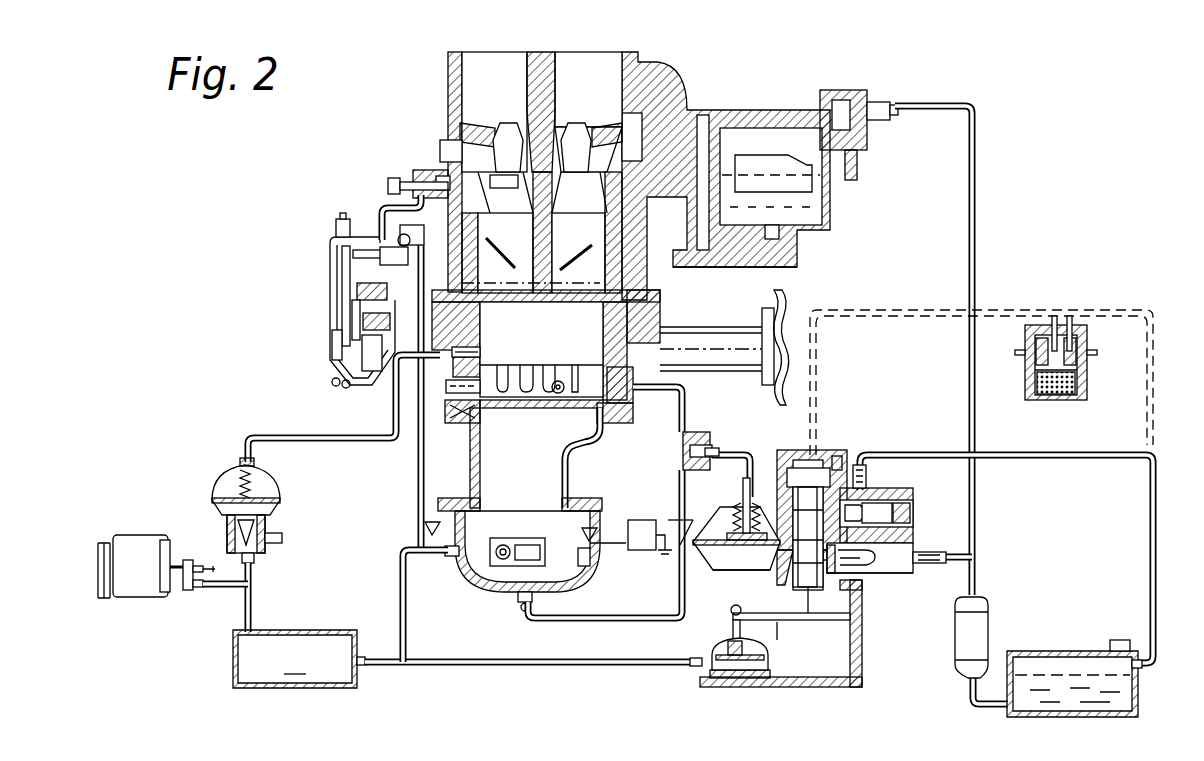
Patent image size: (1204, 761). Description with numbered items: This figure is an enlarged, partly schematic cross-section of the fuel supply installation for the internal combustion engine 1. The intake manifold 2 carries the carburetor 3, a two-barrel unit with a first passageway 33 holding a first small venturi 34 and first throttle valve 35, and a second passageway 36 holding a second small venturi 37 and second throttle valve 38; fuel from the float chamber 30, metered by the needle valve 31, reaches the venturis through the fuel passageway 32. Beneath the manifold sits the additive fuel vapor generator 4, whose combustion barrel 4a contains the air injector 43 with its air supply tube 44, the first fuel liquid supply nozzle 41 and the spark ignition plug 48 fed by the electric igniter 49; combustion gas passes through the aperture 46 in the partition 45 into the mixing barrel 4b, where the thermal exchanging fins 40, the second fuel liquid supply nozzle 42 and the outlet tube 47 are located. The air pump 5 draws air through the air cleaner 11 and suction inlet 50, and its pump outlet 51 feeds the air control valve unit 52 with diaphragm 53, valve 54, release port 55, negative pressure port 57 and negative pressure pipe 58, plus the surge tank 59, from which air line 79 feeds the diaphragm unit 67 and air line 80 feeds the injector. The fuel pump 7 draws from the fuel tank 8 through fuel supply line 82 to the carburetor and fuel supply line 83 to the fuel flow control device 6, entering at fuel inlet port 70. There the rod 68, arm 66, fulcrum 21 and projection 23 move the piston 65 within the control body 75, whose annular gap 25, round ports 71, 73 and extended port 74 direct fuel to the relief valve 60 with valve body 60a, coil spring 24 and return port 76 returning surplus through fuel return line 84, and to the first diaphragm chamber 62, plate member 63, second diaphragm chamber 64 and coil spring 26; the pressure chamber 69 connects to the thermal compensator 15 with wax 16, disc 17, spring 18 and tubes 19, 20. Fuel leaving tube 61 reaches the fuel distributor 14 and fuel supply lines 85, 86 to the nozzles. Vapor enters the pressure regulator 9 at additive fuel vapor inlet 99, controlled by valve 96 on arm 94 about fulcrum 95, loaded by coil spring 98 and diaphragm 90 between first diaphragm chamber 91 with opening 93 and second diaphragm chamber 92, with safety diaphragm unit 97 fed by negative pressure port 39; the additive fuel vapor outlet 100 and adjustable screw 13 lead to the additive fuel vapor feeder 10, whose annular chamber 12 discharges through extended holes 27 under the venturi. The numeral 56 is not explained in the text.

The internal combustion engine 1 is at (787, 308).
The intake manifold 2 is at (698, 332).
The carburetor 3 is at (738, 81).
The additive fuel vapor generator 4 is at (410, 495).
The combustion barrel 4a is at (400, 495).
The mixing barrel 4b is at (393, 420).
The air pump 5 is at (140, 535).
The fuel flow control device 6 is at (914, 665).
The fuel pump 7 is at (955, 656).
The fuel tank 8 is at (1040, 652).
The pressure regulator 9 is at (328, 290).
The additive fuel vapor feeder 10 is at (475, 137).
The air cleaner 11 is at (202, 546).
The annular chamber 12 is at (450, 150).
The adjustable screw 13 is at (388, 188).
The fuel distributor 14 is at (703, 432).
The thermal compensator 15 is at (1085, 365).
The temperature sensitive wax 16 is at (1062, 400).
The disc 17 is at (1028, 385).
The spring 18 is at (1037, 345).
The tube 19 is at (1055, 316).
The tube 20 is at (1074, 323).
The fulcrum 21 is at (880, 610).
The projection 23 is at (860, 590).
The coil spring 24 is at (905, 530).
The annular gap 25 is at (870, 574).
The coil spring 26 is at (712, 525).
The extended holes 27 is at (500, 188).
The float chamber 30 is at (758, 128).
The needle valve 31 is at (852, 112).
The fuel passageway 32 is at (737, 267).
The first passageway 33 is at (497, 56).
The first small venturi 34 is at (481, 127).
The first throttle valve 35 is at (500, 250).
The second passageway 36 is at (602, 56).
The second small venturi 37 is at (588, 127).
The second throttle valve 38 is at (577, 256).
The negative pressure port 39 is at (440, 183).
The thermal exchanging fins 40 is at (572, 370).
The first fuel liquid supply nozzle 41 is at (519, 605).
The second fuel liquid supply nozzle 42 is at (556, 394).
The air injector 43 is at (495, 575).
The air supply tube 44 is at (455, 565).
The partition 45 is at (500, 412).
The aperture 46 is at (600, 438).
The outlet tube 47 is at (460, 400).
The spark ignition plug 48 is at (586, 556).
The electric igniter 49 is at (633, 519).
The suction inlet 50 is at (196, 565).
The pump outlet 51 is at (200, 590).
The air control valve unit 52 is at (228, 490).
The diaphragm 53 is at (268, 502).
The valve 54 is at (265, 532).
The release port 55 is at (283, 540).
The regulator outlet 56 is at (256, 565).
The negative pressure port 57 is at (254, 462).
The negative pressure pipe 58 is at (478, 350).
The surge tank 59 is at (328, 630).
The relief valve 60 is at (905, 500).
The valve body 60a is at (912, 512).
The tube 61 is at (743, 492).
The first diaphragm chamber 62 is at (693, 520).
The plate member 63 is at (680, 548).
The second diaphragm chamber 64 is at (720, 572).
The piston 65 is at (795, 621).
The arm 66 is at (810, 688).
The diaphragm unit 67 is at (768, 665).
The rod 68 is at (692, 667).
The pressure chamber 69 is at (812, 468).
The fuel inlet port 70 is at (928, 565).
The round port 71 is at (838, 460).
The round port 73 is at (733, 630).
The extended port 74 is at (780, 465).
The control body 75 is at (778, 621).
The return port 76 is at (867, 478).
The air line 79 is at (525, 668).
The air line 80 is at (406, 645).
The fuel supply line 82 is at (976, 232).
The fuel supply line 83 is at (975, 556).
The fuel return line 84 is at (1082, 458).
The fuel supply line 85 is at (635, 620).
The fuel supply line 86 is at (686, 390).
The diaphragm 90 is at (334, 386).
The first diaphragm chamber 91 is at (333, 370).
The second diaphragm chamber 92 is at (370, 375).
The opening 93 is at (360, 320).
The arm 94 is at (355, 330).
The fulcrum 95 is at (340, 275).
The valve 96 is at (336, 240).
The diaphragm unit 97 is at (350, 340).
The coil spring 98 is at (470, 281).
The additive fuel vapor inlet 99 is at (421, 232).
The additive fuel vapor outlet 100 is at (378, 214).